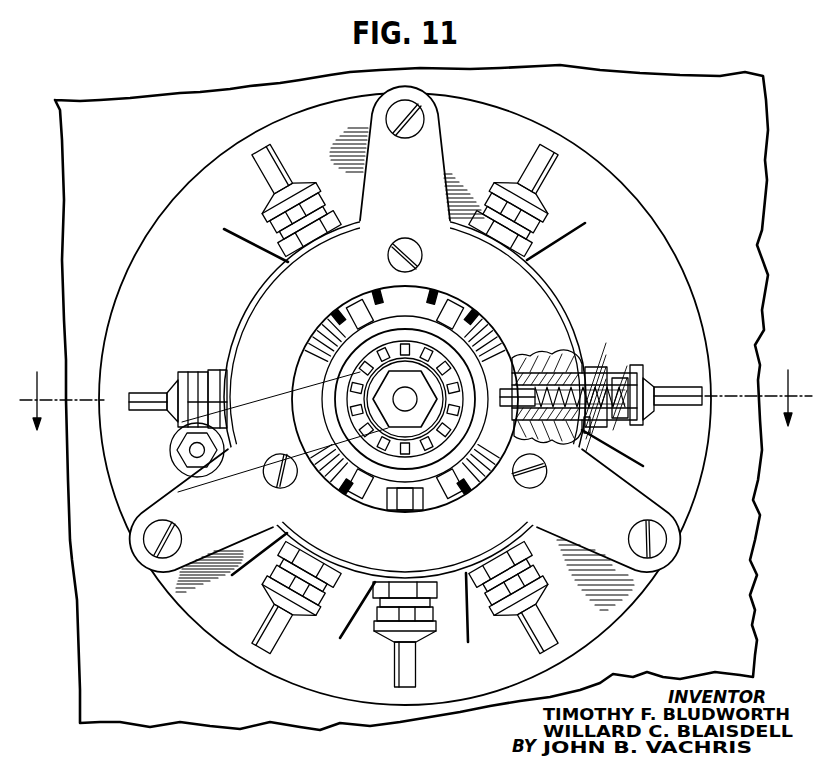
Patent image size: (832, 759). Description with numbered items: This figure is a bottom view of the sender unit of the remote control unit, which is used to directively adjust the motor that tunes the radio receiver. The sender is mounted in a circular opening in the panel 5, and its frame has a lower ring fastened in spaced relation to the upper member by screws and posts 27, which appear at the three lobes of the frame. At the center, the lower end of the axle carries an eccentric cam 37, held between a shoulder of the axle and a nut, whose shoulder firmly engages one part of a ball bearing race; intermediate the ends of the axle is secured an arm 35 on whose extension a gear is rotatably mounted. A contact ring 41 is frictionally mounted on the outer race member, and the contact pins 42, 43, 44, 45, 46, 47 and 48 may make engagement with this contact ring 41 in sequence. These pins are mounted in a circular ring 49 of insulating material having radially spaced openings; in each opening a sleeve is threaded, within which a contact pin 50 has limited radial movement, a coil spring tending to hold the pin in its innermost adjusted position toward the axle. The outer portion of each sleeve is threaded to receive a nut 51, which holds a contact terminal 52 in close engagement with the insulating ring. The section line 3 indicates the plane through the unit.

The section line 3 is at (412, 400).
The panel 5 is at (407, 399).
The screws and posts 27 is at (413, 122).
The arm 35 is at (418, 335).
The eccentric cam 37 is at (411, 399).
The contact ring 41 is at (357, 344).
The contact pin 42 is at (543, 181).
The contact pin 43 is at (280, 172).
The contact pin 44 is at (143, 392).
The contact pin 45 is at (277, 623).
The contact pin 46 is at (417, 673).
The contact pin 47 is at (555, 632).
The contact pin 48 is at (680, 383).
The circular ring of insulating material 49 is at (580, 362).
The contact pin 50 is at (620, 400).
The nut 51 is at (592, 374).
The contact terminal 52 is at (646, 465).